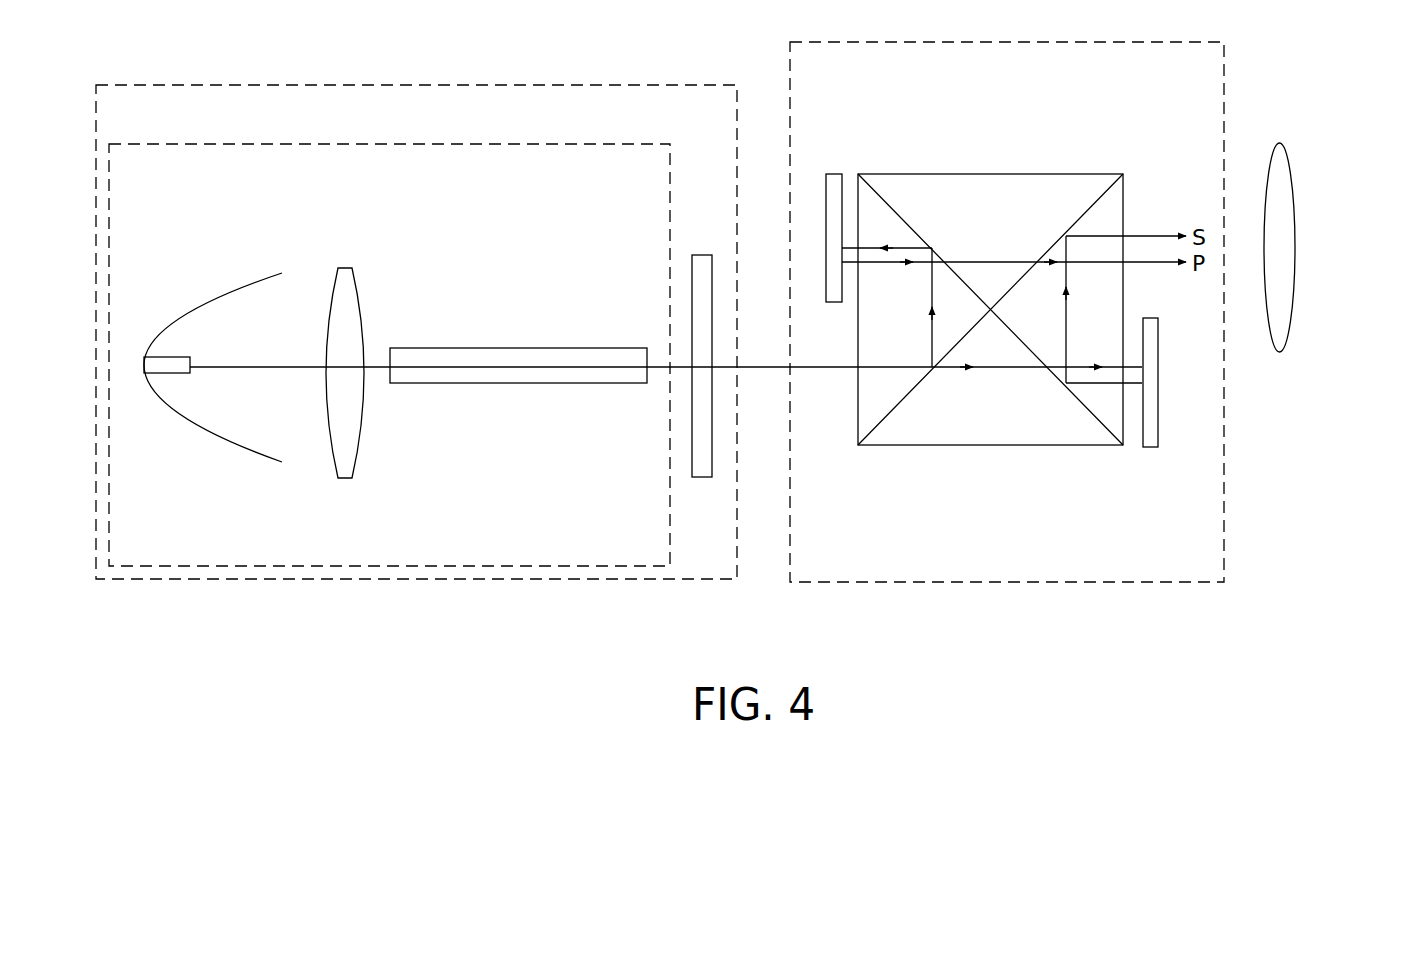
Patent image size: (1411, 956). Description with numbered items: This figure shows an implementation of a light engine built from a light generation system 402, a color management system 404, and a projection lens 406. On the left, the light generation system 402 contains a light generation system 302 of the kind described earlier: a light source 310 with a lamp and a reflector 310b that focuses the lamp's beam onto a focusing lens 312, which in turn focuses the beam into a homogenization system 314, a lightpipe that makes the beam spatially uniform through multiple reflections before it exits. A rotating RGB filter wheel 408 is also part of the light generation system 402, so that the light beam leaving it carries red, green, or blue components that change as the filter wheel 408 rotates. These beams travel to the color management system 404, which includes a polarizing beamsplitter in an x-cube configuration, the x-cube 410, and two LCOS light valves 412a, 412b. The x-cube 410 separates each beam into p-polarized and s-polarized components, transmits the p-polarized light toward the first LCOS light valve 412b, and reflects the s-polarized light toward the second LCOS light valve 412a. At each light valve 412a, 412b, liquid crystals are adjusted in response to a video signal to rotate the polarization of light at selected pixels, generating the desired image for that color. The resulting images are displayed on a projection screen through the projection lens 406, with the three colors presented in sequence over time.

The light generation system 302 is at (598, 144).
The light source 310 is at (217, 388).
The reflector 310b is at (207, 340).
The focusing lens 312 is at (342, 326).
The homogenization system 314 is at (518, 317).
The light generation system 402 is at (416, 352).
The color management system 404 is at (1007, 331).
The projection lens 406 is at (1316, 293).
The RGB filter wheel 408 is at (690, 437).
The x-cube 410 is at (1027, 195).
The LCOS light valve 412a is at (832, 173).
The LCOS light valve 412b is at (1153, 447).